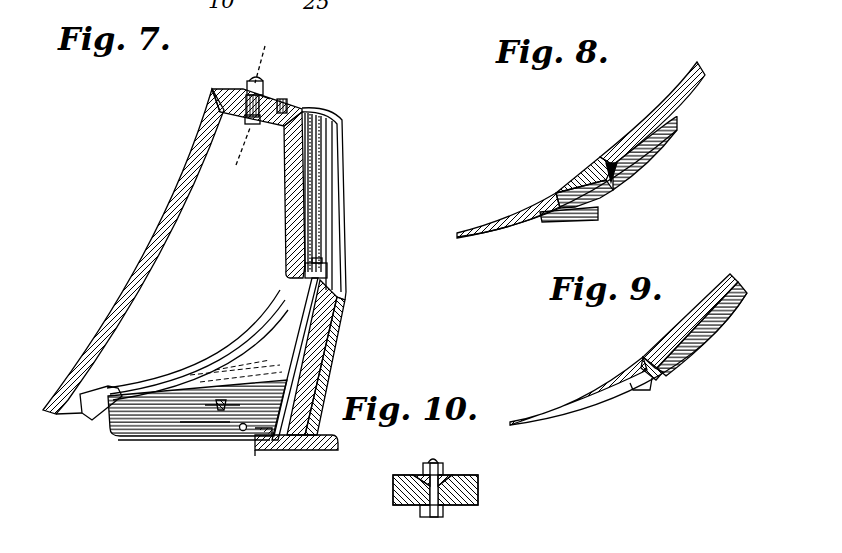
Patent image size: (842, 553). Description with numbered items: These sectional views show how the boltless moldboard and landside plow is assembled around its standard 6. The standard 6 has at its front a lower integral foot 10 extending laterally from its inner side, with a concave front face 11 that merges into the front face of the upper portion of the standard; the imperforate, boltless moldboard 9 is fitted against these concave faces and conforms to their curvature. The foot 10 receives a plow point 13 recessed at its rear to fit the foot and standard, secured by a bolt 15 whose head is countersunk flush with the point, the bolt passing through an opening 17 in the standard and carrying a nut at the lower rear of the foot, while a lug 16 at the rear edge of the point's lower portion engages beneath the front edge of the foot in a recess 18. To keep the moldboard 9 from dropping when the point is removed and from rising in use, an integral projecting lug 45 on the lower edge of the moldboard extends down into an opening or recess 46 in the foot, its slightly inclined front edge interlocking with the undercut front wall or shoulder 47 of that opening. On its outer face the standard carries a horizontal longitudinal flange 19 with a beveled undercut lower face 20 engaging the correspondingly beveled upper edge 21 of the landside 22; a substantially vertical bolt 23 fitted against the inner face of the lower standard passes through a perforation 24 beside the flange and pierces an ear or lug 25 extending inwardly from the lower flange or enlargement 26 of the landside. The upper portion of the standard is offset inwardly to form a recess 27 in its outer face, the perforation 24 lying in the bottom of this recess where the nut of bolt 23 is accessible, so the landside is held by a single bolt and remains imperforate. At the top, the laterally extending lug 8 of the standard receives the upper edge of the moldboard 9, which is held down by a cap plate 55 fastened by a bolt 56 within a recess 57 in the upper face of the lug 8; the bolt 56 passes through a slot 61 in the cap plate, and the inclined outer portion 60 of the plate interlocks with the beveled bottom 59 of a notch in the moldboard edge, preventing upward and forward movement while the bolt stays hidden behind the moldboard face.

In FIG. 7, the standard 6 is at (291, 222).
In FIG. 7, the laterally extending lug 8 is at (284, 127).
In FIG. 10, the laterally extending lug 8 is at (480, 493).
In FIG. 7, the moldboard 9 is at (150, 258).
In FIG. 8, the moldboard 9 is at (660, 103).
In FIG. 9, the moldboard 9 is at (680, 333).
In FIG. 7, the foot 10 is at (160, 395).
In FIG. 8, the foot 10 is at (667, 147).
In FIG. 9, the foot 10 is at (697, 343).
In FIG. 7, the concave front face 11 is at (192, 355).
In FIG. 8, the plow point 13 is at (512, 223).
In FIG. 9, the plow point 13 is at (580, 397).
In FIG. 8, the bolt 15 is at (590, 220).
In FIG. 9, the lug 16 is at (657, 375).
In FIG. 7, the opening 17 is at (243, 431).
In FIG. 7, the recess 18 is at (100, 410).
In FIG. 9, the recess 18 is at (643, 390).
In FIG. 7, the horizontal longitudinal flange 19 is at (347, 290).
In FIG. 7, the beveled undercut lower face 20 is at (350, 300).
In FIG. 7, the beveled upper edge 21 is at (342, 327).
In FIG. 7, the landside 22 is at (325, 358).
In FIG. 7, the vertical bolt 23 is at (300, 358).
In FIG. 7, the perforation 24 is at (300, 278).
In FIG. 7, the ear or lug 25 is at (270, 450).
In FIG. 7, the lower flange or enlargement 26 is at (314, 452).
In FIG. 7, the recess 27 is at (312, 235).
In FIG. 7, the projecting lug 45 is at (212, 404).
In FIG. 8, the projecting lug 45 is at (607, 163).
In FIG. 7, the opening or recess 46 is at (221, 400).
In FIG. 8, the opening or recess 46 is at (617, 177).
In FIG. 7, the undercut front wall or shoulder 47 is at (190, 422).
In FIG. 8, the undercut front wall or shoulder 47 is at (597, 190).
In FIG. 7, the cap plate 55 is at (270, 95).
In FIG. 10, the cap plate 55 is at (442, 470).
In FIG. 7, the bolt 56 is at (253, 125).
In FIG. 10, the bolt 56 is at (435, 517).
In FIG. 7, the recess 57 is at (288, 100).
In FIG. 10, the recess 57 is at (413, 503).
In FIG. 7, the bottom of the notch 59 is at (212, 108).
In FIG. 7, the outer portion of the cap plate 60 is at (223, 88).
In FIG. 7, the slot 61 is at (267, 93).
In FIG. 10, the slot 61 is at (453, 505).